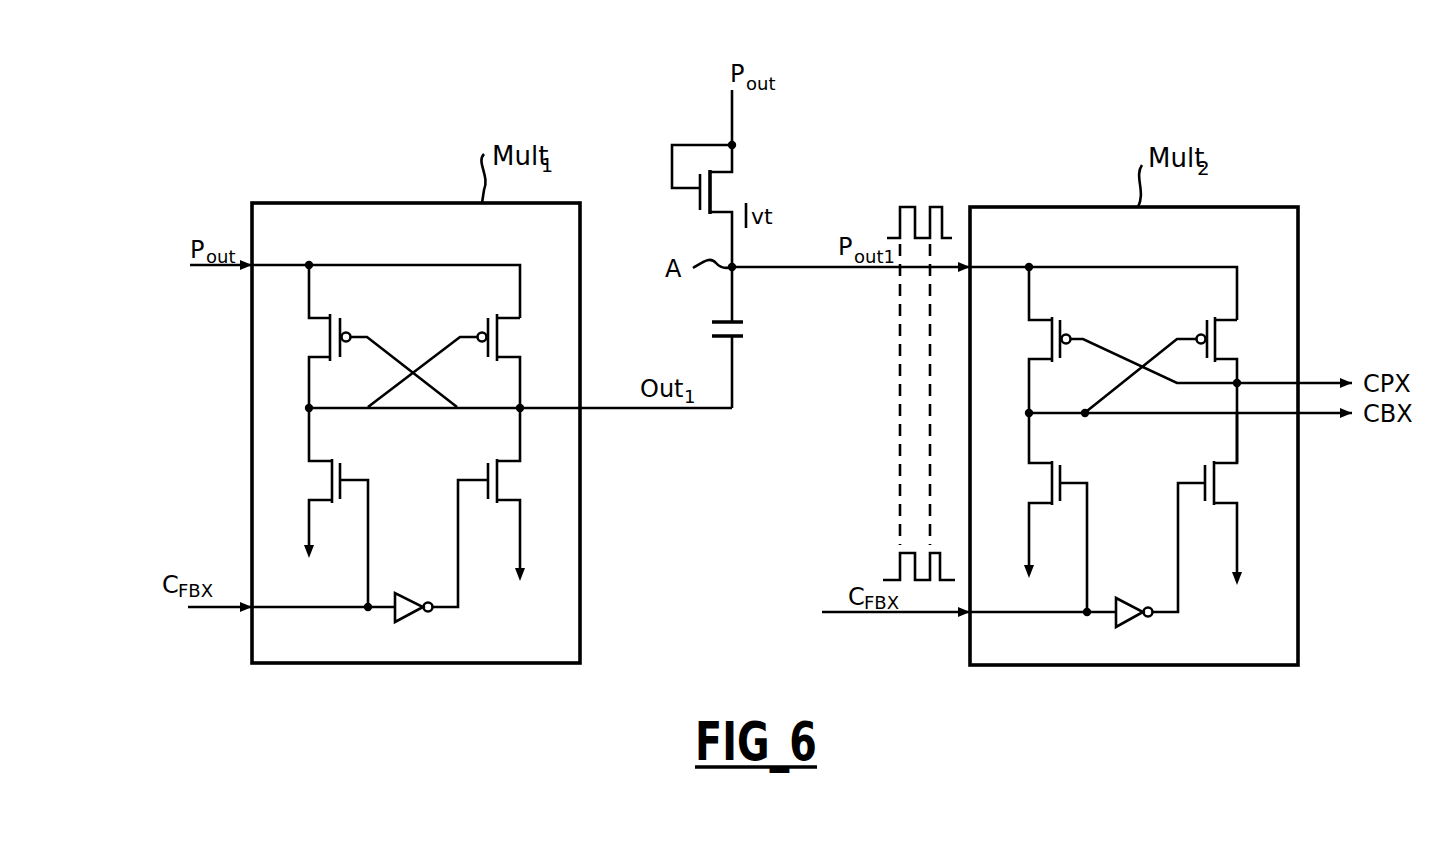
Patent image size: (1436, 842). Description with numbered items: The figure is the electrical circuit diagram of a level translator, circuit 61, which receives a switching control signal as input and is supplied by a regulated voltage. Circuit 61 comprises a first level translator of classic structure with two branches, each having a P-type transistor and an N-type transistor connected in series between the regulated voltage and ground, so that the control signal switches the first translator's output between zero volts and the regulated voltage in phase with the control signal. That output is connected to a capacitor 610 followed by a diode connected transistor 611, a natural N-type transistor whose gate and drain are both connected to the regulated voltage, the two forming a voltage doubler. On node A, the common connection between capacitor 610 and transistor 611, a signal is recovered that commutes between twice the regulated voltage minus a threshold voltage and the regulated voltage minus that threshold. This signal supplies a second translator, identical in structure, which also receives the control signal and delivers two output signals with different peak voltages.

The circuit 61 is at (796, 224).
The capacitor 610 is at (745, 335).
The diode connected transistor 611 is at (718, 186).